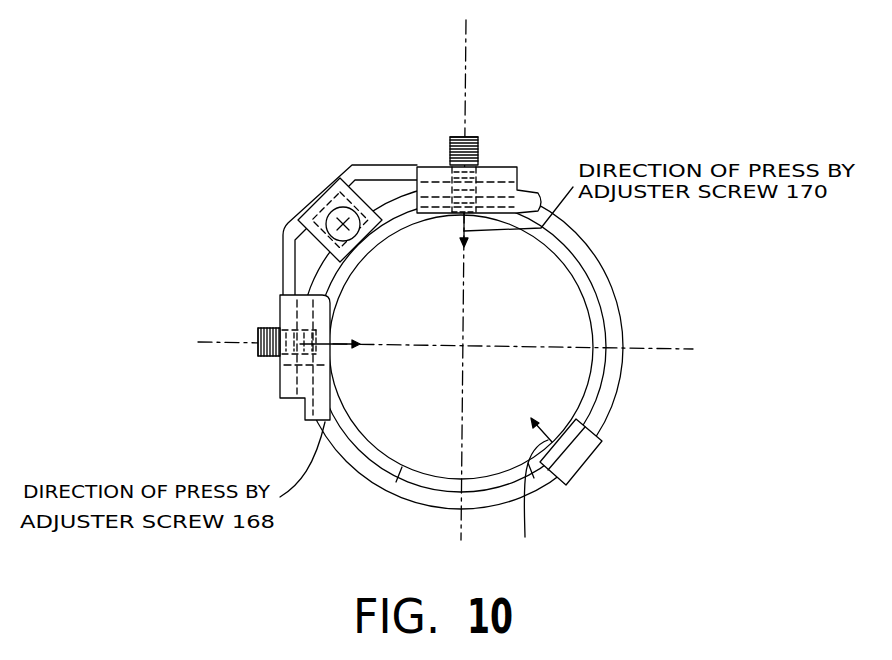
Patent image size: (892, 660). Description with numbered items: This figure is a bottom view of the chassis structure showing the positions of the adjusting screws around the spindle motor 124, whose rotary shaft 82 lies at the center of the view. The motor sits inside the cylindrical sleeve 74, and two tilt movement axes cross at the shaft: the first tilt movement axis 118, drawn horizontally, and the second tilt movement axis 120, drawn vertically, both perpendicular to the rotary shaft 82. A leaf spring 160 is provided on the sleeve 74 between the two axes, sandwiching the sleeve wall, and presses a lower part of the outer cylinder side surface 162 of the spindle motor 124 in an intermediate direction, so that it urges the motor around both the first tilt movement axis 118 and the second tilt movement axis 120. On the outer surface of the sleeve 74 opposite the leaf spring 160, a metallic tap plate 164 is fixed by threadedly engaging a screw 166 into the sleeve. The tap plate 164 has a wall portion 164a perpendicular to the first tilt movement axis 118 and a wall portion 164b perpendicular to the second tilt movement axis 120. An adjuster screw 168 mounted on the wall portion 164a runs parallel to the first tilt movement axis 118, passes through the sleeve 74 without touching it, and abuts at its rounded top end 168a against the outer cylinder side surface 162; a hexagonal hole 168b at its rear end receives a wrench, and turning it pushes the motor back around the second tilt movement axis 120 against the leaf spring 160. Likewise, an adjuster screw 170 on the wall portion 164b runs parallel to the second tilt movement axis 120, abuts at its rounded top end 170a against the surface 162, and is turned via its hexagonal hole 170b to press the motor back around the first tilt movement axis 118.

The sleeve 74 is at (613, 387).
The rotary shaft 82 is at (463, 347).
The first tilt movement axis 118 is at (667, 348).
The second tilt movement axis 120 is at (470, 45).
The spindle motor 124 is at (580, 320).
The leaf spring 160 is at (578, 452).
The outer cylinder side surface 162 is at (403, 470).
The tap plate 164 is at (387, 160).
The wall portion 164a is at (280, 378).
The wall portion 164b is at (502, 165).
The screw 166 is at (325, 200).
The adjuster screw 168 is at (262, 330).
The rounded top end 168a is at (318, 342).
The hexagonal hole 168b is at (262, 332).
The adjuster screw 170 is at (478, 137).
The rounded top end 170a is at (457, 215).
The hexagonal hole 170b is at (470, 130).